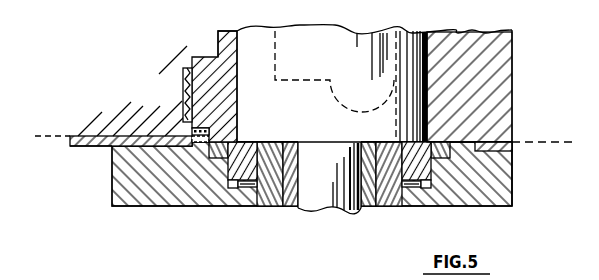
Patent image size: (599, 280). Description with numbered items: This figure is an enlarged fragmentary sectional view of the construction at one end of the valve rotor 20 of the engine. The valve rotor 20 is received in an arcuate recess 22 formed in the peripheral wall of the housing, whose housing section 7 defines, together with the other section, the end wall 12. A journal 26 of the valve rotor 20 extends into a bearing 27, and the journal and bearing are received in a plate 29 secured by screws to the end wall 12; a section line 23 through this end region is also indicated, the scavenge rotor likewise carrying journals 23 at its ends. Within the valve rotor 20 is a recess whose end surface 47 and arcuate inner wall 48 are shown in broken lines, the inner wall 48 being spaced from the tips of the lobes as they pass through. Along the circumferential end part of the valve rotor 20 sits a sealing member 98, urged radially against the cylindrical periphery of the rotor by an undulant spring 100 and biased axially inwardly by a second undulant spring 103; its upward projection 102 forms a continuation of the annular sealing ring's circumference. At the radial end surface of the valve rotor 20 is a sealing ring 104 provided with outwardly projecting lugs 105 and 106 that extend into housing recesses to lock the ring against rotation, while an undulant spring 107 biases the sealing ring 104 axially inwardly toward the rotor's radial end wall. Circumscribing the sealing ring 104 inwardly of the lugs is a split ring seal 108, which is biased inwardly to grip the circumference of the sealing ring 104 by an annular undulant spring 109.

The housing section 7 is at (520, 100).
The end wall 12 is at (90, 147).
The valve rotor 20 is at (374, 83).
The arcuate recess 22 is at (424, 56).
The journal 23 is at (57, 125).
The journal 26 is at (332, 208).
The bearing 27 is at (366, 203).
The plate 29 is at (125, 188).
The end surface 47 is at (302, 80).
The arcuate inner wall 48 is at (391, 55).
The sealing member 98 is at (212, 62).
The undulant spring 100 is at (182, 85).
The upward projection 102 is at (228, 21).
The undulant spring 103 is at (192, 131).
The sealing ring 104 is at (243, 160).
The lug 105 is at (253, 141).
The lug 106 is at (422, 199).
The undulant spring 107 is at (255, 190).
The split ring seal 108 is at (228, 142).
The annular undulant spring 109 is at (217, 142).